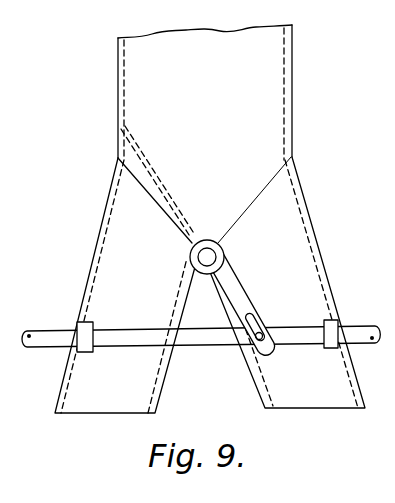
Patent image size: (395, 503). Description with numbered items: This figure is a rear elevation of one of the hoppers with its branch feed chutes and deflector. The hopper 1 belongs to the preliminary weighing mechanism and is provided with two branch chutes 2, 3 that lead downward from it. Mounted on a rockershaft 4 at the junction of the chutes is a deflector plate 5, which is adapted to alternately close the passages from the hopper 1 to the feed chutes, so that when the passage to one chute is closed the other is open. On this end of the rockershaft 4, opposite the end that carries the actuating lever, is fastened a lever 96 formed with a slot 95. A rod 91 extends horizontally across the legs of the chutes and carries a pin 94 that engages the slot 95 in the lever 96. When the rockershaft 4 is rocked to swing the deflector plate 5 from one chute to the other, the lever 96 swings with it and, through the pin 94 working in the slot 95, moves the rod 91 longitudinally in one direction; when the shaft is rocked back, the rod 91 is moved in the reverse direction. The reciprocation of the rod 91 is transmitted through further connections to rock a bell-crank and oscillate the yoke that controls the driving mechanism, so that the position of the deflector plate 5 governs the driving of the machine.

The hopper 1 is at (270, 64).
The branch chute 2 is at (314, 402).
The branch chute 3 is at (104, 404).
The rockershaft 4 is at (208, 255).
The deflector plate 5 is at (160, 180).
The rod 91 is at (316, 313).
The pin 94 is at (264, 347).
The slot 95 is at (255, 318).
The lever 96 is at (234, 283).